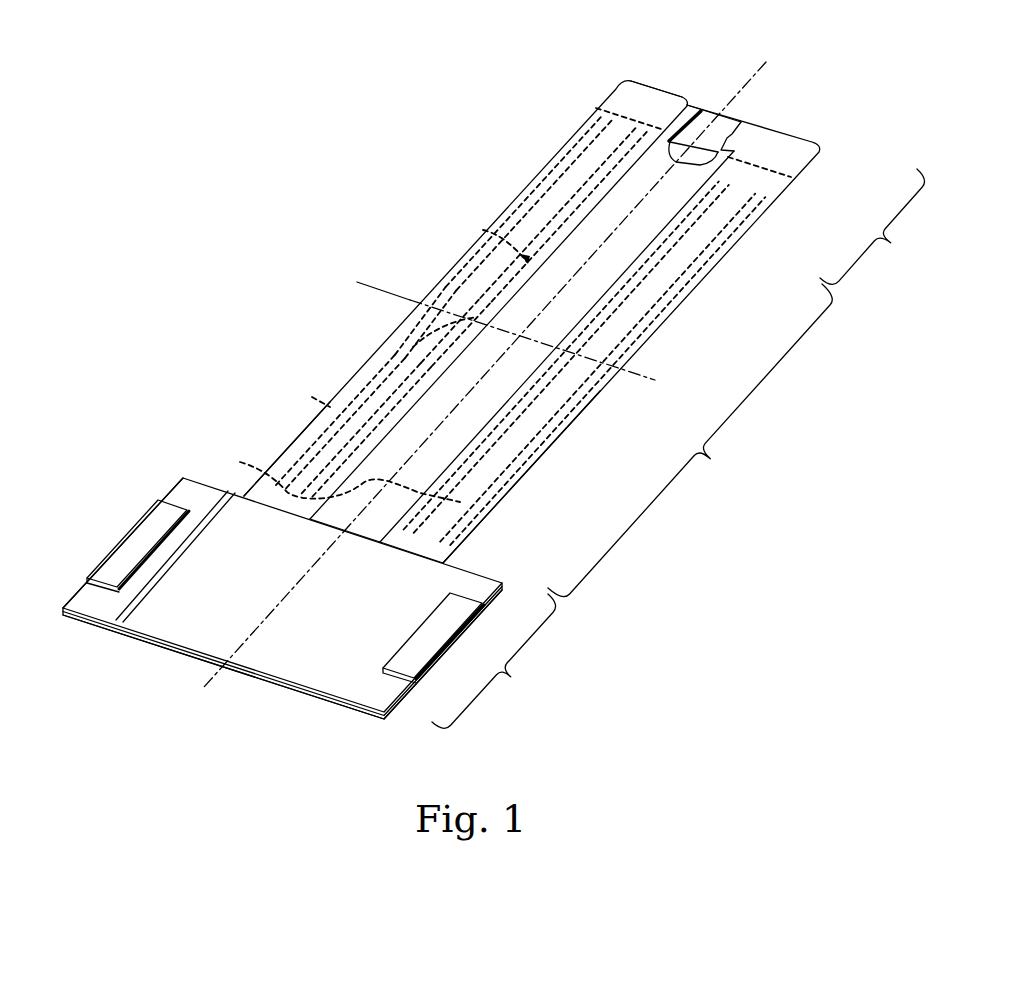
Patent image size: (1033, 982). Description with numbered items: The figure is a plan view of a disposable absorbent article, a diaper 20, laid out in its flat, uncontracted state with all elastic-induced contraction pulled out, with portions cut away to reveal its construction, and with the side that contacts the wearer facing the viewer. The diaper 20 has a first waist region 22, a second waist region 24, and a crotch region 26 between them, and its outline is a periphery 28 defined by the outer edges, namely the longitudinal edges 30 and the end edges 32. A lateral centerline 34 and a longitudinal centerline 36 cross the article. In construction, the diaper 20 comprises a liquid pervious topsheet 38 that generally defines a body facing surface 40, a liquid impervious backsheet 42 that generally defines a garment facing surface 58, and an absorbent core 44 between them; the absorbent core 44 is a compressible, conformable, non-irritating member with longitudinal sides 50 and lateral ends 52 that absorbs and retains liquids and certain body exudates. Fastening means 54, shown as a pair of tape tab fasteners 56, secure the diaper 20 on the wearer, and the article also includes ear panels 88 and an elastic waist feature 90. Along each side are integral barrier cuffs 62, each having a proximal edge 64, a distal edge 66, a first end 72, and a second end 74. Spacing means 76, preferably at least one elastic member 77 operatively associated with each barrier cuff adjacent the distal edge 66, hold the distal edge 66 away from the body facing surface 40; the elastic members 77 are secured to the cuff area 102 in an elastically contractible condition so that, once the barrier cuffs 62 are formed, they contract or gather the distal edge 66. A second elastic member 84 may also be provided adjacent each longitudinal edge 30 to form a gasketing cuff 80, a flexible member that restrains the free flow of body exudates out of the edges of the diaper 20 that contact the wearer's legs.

The diaper 20 is at (412, 163).
The first waist region 22 is at (881, 226).
The second waist region 24 is at (494, 661).
The crotch region 26 is at (690, 440).
The periphery 28 is at (293, 447).
The longitudinal edges 30 is at (589, 116).
The end edges 32 is at (200, 653).
The lateral centerline 34 is at (370, 283).
The longitudinal centerline 36 is at (763, 72).
The topsheet 38 is at (677, 123).
The body facing surface 40 is at (655, 213).
The backsheet 42 is at (708, 118).
The absorbent core 44 is at (725, 128).
The longitudinal sides 50 is at (757, 232).
The lateral ends 52 is at (240, 462).
The fastening means 54 is at (150, 523).
The tape tab fasteners 56 is at (123, 560).
The garment facing surface 58 is at (312, 397).
The barrier cuffs 62 is at (450, 543).
The proximal edge 64 is at (536, 462).
The distal edge 66 is at (395, 518).
The first end 72 is at (778, 130).
The second end 74 is at (417, 553).
The spacing means 76 is at (483, 230).
The elastic members 77 is at (397, 318).
The gasketing cuffs 80 is at (550, 172).
The second elastic member 84 is at (372, 356).
The ear panels 88 is at (100, 624).
The elastic waist feature 90 is at (337, 678).
The cuff area 102 is at (543, 393).